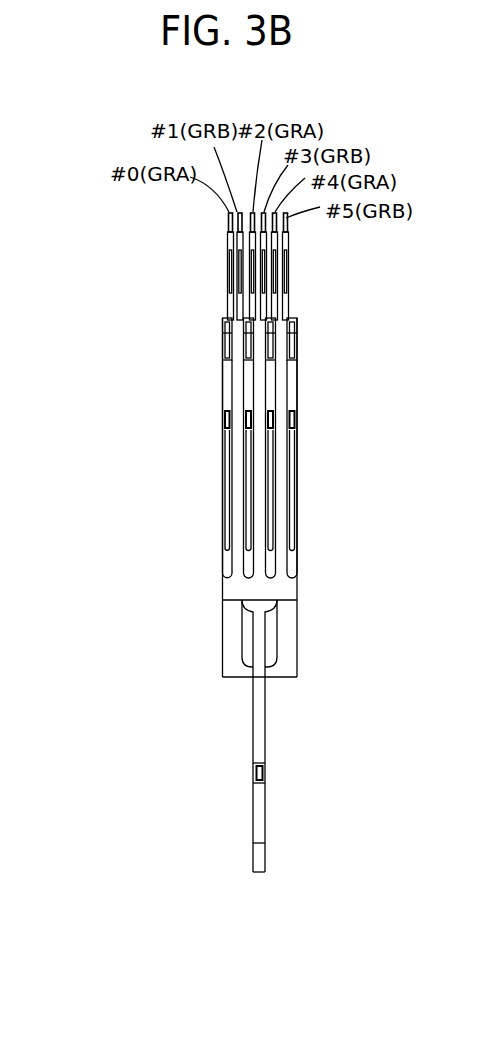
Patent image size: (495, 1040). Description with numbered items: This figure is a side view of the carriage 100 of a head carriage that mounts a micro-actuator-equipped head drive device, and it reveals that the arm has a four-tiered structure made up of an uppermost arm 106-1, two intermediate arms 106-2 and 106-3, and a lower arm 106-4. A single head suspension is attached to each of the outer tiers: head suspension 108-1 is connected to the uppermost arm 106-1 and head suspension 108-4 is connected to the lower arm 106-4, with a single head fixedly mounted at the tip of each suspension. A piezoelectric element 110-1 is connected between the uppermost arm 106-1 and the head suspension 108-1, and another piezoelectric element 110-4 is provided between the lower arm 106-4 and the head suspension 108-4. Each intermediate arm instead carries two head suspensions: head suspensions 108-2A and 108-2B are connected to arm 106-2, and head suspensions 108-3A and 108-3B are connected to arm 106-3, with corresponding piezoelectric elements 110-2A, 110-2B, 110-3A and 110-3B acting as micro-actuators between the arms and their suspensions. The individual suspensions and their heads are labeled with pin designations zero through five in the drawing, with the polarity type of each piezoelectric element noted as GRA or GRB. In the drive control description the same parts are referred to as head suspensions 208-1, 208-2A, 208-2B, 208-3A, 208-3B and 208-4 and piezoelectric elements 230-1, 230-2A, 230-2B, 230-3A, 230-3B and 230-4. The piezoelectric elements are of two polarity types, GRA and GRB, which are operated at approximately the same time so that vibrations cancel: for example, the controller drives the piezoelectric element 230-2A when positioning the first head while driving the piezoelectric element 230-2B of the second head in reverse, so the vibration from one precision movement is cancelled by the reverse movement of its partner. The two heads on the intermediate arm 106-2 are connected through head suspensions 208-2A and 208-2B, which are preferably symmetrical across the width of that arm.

The carriage 100 is at (314, 553).
The uppermost arm 106-1 is at (224, 452).
The intermediate arm 106-2 is at (245, 500).
The intermediate arm 106-3 is at (273, 488).
The lower arm 106-4 is at (290, 450).
The head suspension 108-1 is at (147, 276).
The head suspension 108-2A is at (142, 276).
The head suspension 108-2B is at (147, 276).
The head suspension 108-3A is at (369, 276).
The head suspension 108-3B is at (375, 276).
The head suspension 108-4 is at (370, 276).
The piezoelectric element 110-1 is at (141, 339).
The piezoelectric element 110-2A is at (137, 345).
The piezoelectric element 110-2B is at (136, 361).
The piezoelectric element 110-3A is at (375, 359).
The piezoelectric element 110-3B is at (376, 347).
The piezoelectric element 110-4 is at (371, 339).
The head suspension 208-1 is at (227, 248).
The head suspension 208-2A is at (237, 275).
The head suspension 208-2B is at (249, 287).
The head suspension 208-3A is at (282, 262).
The head suspension 208-3B is at (280, 282).
The head suspension 208-4 is at (289, 302).
The piezoelectric element 230-1 is at (227, 318).
The piezoelectric element 230-2A is at (243, 335).
The piezoelectric element 230-2B is at (252, 345).
The piezoelectric element 230-3A is at (276, 372).
The piezoelectric element 230-3B is at (279, 350).
The piezoelectric element 230-4 is at (297, 332).